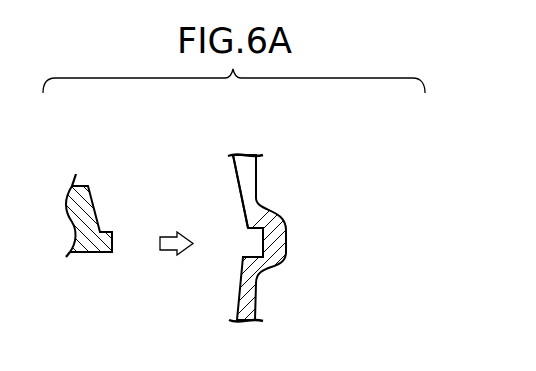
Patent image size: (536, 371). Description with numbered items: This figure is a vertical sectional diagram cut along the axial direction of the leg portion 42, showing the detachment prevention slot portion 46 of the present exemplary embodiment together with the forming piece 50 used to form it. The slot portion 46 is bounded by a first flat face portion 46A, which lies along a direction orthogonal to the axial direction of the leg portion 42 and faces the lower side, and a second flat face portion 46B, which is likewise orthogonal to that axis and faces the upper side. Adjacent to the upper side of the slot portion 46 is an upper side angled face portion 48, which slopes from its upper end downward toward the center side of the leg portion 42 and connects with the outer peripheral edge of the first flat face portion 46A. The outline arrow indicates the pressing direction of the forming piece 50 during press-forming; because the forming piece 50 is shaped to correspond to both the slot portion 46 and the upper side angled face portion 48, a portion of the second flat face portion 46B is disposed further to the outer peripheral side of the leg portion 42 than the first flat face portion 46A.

The leg portion 42 is at (268, 160).
The upper side angled face portion 48 is at (241, 215).
The detachment prevention slot portion 46 is at (250, 242).
The first flat face portion 46A is at (249, 232).
The second flat face portion 46B is at (250, 252).
The forming piece 50 is at (97, 200).